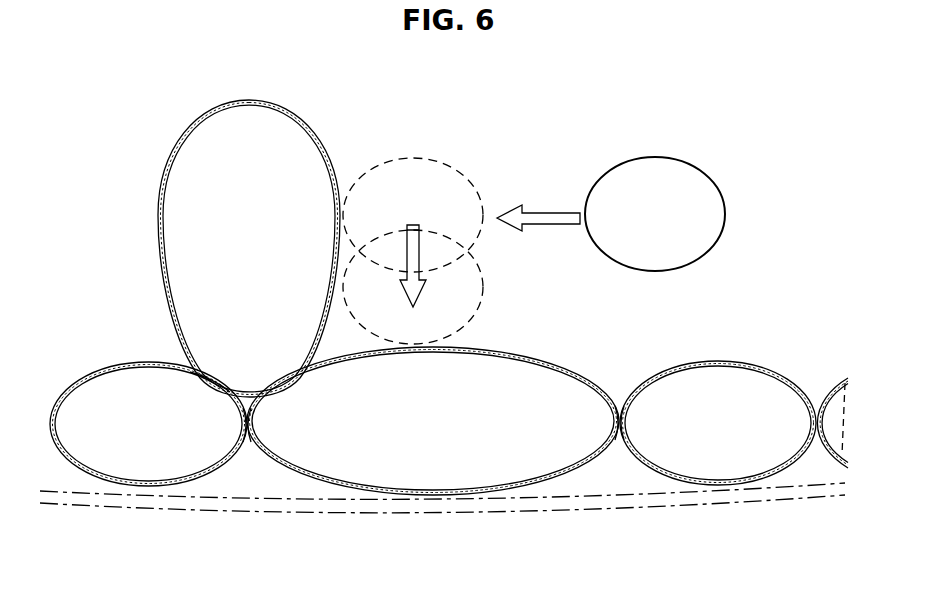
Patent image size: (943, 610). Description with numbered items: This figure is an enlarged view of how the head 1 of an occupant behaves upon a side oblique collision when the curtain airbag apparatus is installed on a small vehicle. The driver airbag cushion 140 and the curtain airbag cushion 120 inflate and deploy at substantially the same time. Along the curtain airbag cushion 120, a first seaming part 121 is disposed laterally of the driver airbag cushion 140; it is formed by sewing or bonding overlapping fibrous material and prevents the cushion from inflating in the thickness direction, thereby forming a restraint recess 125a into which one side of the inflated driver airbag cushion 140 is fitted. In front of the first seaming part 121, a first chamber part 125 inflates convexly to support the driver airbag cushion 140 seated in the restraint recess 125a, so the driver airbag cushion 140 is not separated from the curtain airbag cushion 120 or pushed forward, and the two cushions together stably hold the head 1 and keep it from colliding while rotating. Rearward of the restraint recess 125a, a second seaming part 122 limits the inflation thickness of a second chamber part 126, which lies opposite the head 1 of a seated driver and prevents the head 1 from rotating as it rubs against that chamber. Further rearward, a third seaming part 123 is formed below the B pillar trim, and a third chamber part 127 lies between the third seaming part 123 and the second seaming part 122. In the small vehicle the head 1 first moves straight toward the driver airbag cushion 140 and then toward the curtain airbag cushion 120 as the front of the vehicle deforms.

The head of the occupant 1 is at (687, 175).
The curtain airbag cushion 120 is at (120, 492).
The first seaming part 121 is at (247, 432).
The second seaming part 122 is at (620, 432).
The third seaming part 123 is at (803, 455).
The first chamber part 125 is at (83, 379).
The restraint recess 125a is at (210, 378).
The second chamber part 126 is at (508, 492).
The third chamber part 127 is at (747, 487).
The driver airbag cushion 140 is at (320, 141).